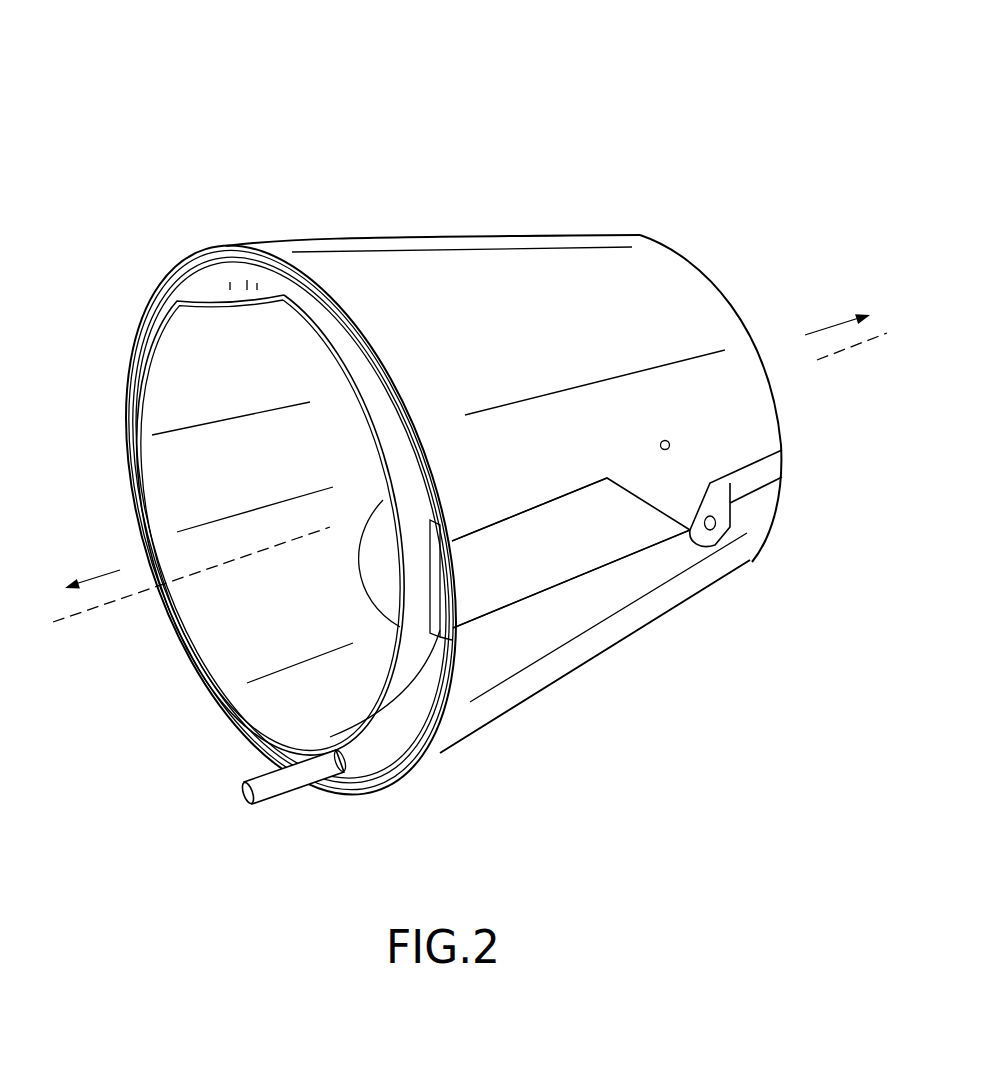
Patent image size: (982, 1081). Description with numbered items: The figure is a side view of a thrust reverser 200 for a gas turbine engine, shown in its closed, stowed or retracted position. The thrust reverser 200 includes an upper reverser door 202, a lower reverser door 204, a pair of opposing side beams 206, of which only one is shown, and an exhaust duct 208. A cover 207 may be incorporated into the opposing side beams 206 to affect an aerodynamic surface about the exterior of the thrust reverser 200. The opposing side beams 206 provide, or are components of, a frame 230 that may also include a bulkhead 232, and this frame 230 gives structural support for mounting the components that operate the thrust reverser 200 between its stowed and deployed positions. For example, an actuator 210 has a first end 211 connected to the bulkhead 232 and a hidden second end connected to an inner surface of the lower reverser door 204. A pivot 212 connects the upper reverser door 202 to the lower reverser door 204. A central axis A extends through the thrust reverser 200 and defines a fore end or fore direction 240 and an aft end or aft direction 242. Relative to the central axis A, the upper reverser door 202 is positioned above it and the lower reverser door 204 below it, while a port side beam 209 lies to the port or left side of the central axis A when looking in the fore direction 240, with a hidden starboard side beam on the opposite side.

The thrust reverser 200 is at (108, 78).
The upper reverser door 202 is at (502, 236).
The lower reverser door 204 is at (597, 668).
The opposing side beams 206 is at (447, 598).
The cover 207 is at (508, 577).
The exhaust duct 208 is at (762, 361).
The port side beam 209 is at (580, 557).
The actuator 210 is at (273, 785).
The first end 211 is at (247, 792).
The pivot 212 is at (715, 525).
The frame 230 is at (402, 743).
The bulkhead 232 is at (370, 768).
The fore direction 240 is at (103, 573).
The aft direction 242 is at (837, 327).
The central axis A is at (123, 595).